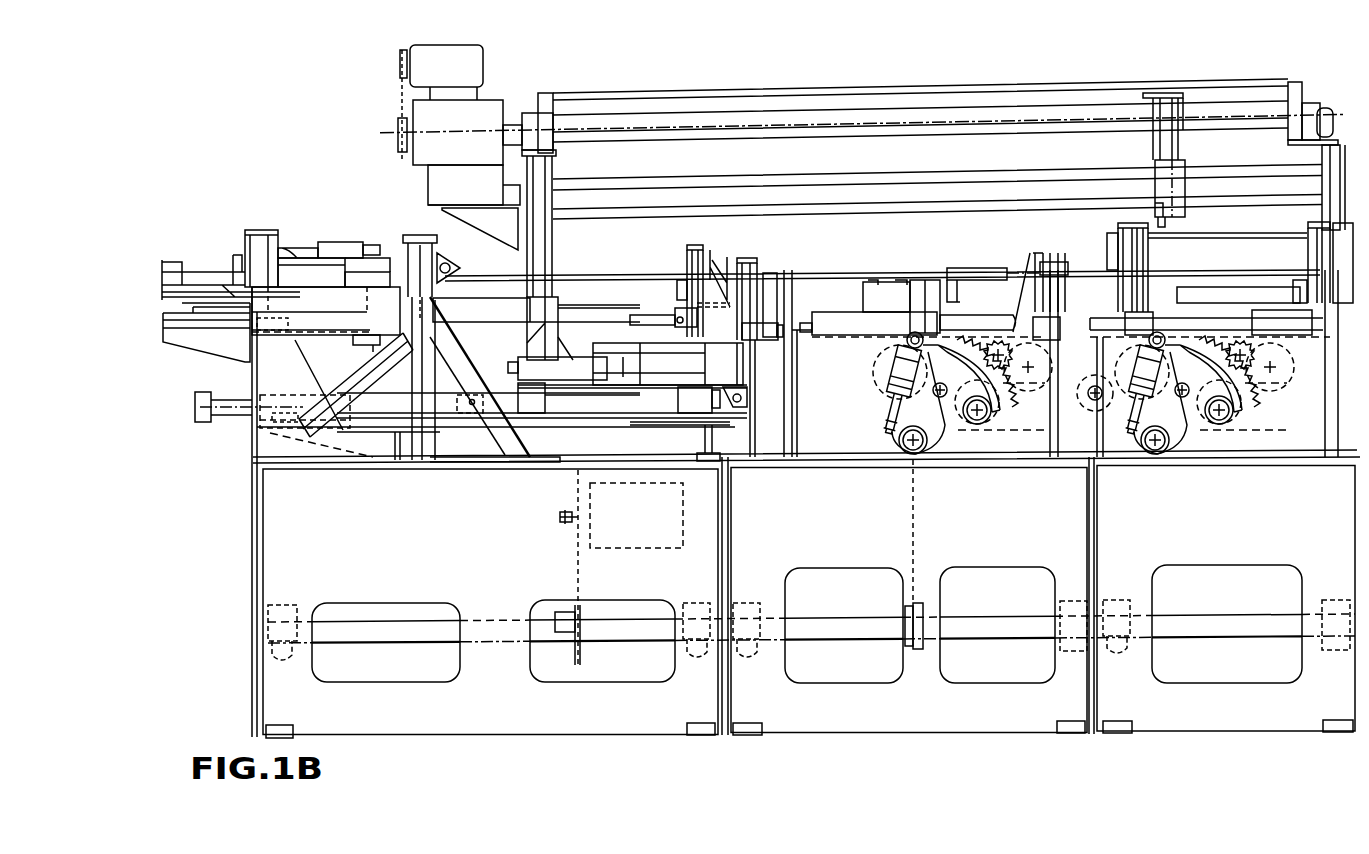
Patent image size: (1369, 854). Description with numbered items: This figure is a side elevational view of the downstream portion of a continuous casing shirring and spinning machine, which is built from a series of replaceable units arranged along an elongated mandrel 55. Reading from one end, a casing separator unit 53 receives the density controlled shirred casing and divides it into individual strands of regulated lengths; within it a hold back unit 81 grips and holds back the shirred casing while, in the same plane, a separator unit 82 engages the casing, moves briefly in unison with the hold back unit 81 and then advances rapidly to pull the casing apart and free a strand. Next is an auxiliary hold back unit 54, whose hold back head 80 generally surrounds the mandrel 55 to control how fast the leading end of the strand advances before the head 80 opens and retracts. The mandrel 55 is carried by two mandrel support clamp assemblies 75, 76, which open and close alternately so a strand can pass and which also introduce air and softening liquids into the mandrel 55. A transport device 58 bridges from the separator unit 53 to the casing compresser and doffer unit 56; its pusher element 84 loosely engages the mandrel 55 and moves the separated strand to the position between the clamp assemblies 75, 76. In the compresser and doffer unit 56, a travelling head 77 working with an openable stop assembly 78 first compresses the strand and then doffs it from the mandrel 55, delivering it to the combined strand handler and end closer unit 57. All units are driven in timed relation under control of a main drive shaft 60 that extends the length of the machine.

The casing separator unit 53 is at (1210, 735).
The auxiliary hold back unit 54 is at (932, 739).
The mandrel 55 is at (860, 271).
The casing compresser and doffer unit 56 is at (578, 737).
The combined strand handler and end closer unit 57 is at (289, 233).
The transport device 58 is at (990, 82).
The main drive shaft 60 is at (370, 637).
The mandrel support clamp assembly 75 is at (1047, 248).
The mandrel support clamp assembly 76 is at (760, 251).
The travelling head 77 is at (684, 253).
The openable stop assembly 78 is at (470, 240).
The hold back head 80 is at (965, 270).
The hold back unit 81 is at (1302, 259).
The separator unit 82 is at (1153, 288).
The pusher element 84 is at (1163, 223).